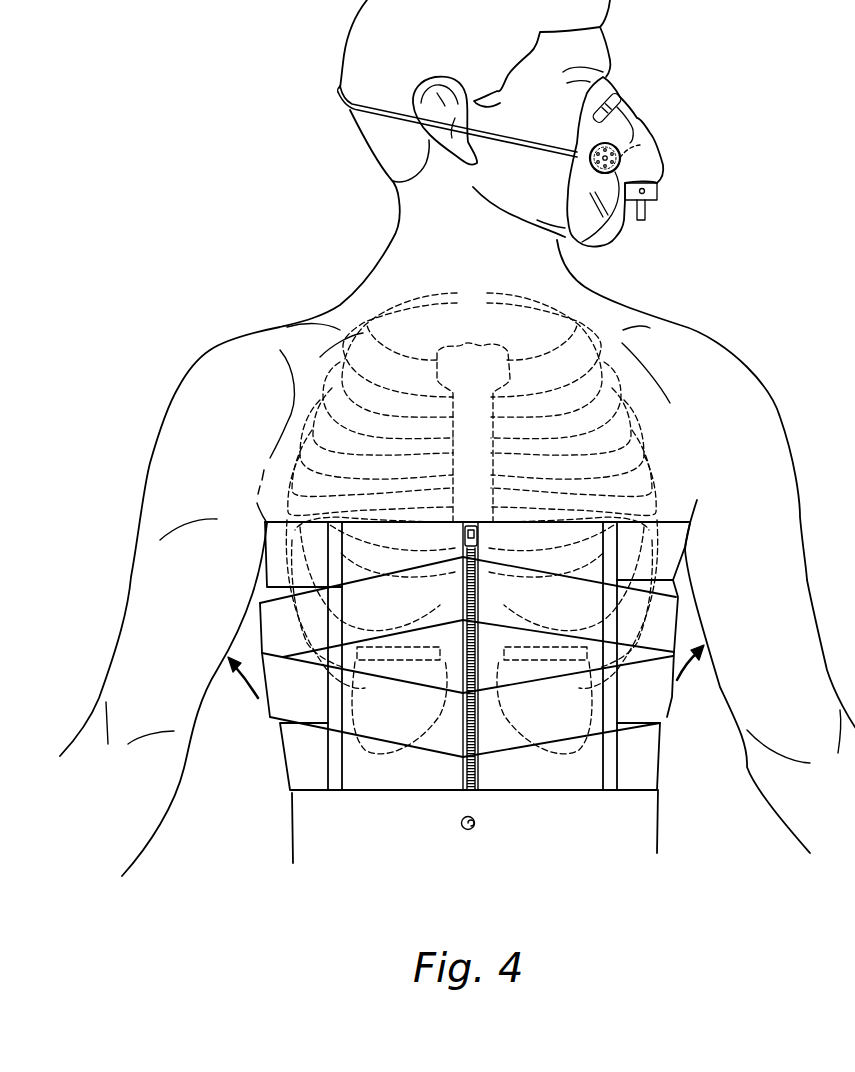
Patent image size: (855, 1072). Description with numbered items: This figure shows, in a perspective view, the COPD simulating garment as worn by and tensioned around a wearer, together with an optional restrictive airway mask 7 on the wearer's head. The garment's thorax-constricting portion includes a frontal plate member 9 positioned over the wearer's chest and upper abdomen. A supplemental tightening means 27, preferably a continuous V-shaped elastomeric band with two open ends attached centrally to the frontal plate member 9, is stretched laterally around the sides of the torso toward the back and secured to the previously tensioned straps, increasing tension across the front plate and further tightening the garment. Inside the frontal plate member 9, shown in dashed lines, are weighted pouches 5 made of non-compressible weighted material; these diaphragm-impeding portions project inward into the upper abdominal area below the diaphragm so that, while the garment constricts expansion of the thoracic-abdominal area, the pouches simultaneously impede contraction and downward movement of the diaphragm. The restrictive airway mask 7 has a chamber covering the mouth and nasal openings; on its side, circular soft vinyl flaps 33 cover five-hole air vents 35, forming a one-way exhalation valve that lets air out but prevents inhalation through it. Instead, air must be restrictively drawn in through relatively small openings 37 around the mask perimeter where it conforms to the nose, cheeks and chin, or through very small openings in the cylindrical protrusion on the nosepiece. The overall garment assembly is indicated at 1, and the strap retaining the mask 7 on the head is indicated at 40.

The chest compression vest 1 is at (673, 767).
The weighted pouches 5 is at (397, 757).
The restrictive airway mask 7 is at (633, 227).
The frontal plate member 9 is at (370, 780).
The supplemental tightening means 27 is at (313, 717).
The soft vinyl flaps 33 is at (630, 130).
The five-hole air vents 35 is at (640, 145).
The small openings 37 is at (657, 196).
The head strap 40 is at (622, 102).